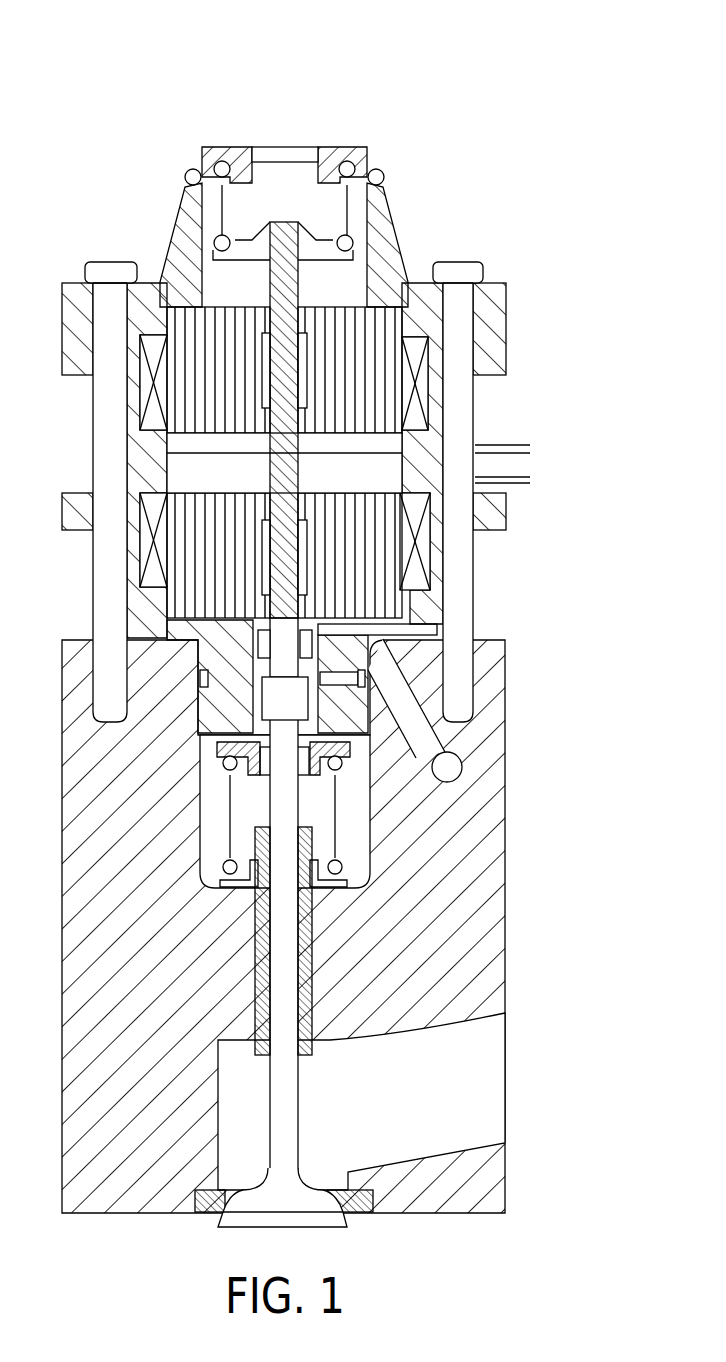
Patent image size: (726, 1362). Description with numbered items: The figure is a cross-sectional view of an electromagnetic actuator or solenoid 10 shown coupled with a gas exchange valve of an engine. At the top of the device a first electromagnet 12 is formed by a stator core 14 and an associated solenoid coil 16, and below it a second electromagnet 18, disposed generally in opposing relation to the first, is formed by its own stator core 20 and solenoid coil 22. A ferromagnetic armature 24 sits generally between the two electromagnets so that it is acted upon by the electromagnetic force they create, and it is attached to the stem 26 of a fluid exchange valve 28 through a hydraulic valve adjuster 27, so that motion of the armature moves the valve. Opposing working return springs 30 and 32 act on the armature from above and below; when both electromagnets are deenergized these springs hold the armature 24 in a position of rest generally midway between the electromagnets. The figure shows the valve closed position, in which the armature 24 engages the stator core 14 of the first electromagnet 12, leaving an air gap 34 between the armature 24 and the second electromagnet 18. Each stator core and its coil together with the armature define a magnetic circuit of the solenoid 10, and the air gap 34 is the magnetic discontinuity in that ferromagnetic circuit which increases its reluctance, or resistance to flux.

The electromagnetic actuator 10 is at (304, 640).
The first electromagnet 12 is at (176, 304).
The stator core 14 is at (390, 308).
The solenoid coil 16 is at (416, 352).
The second electromagnet 18 is at (380, 579).
The stator core 20 is at (178, 570).
The solenoid coil 22 is at (420, 540).
The ferromagnetic armature 24 is at (393, 444).
The stem 26 is at (287, 935).
The hydraulic valve adjuster 27 is at (292, 693).
The fluid exchange valve 28 is at (345, 1215).
The return spring 30 is at (358, 186).
The return spring 32 is at (325, 820).
The air gap 34 is at (385, 479).